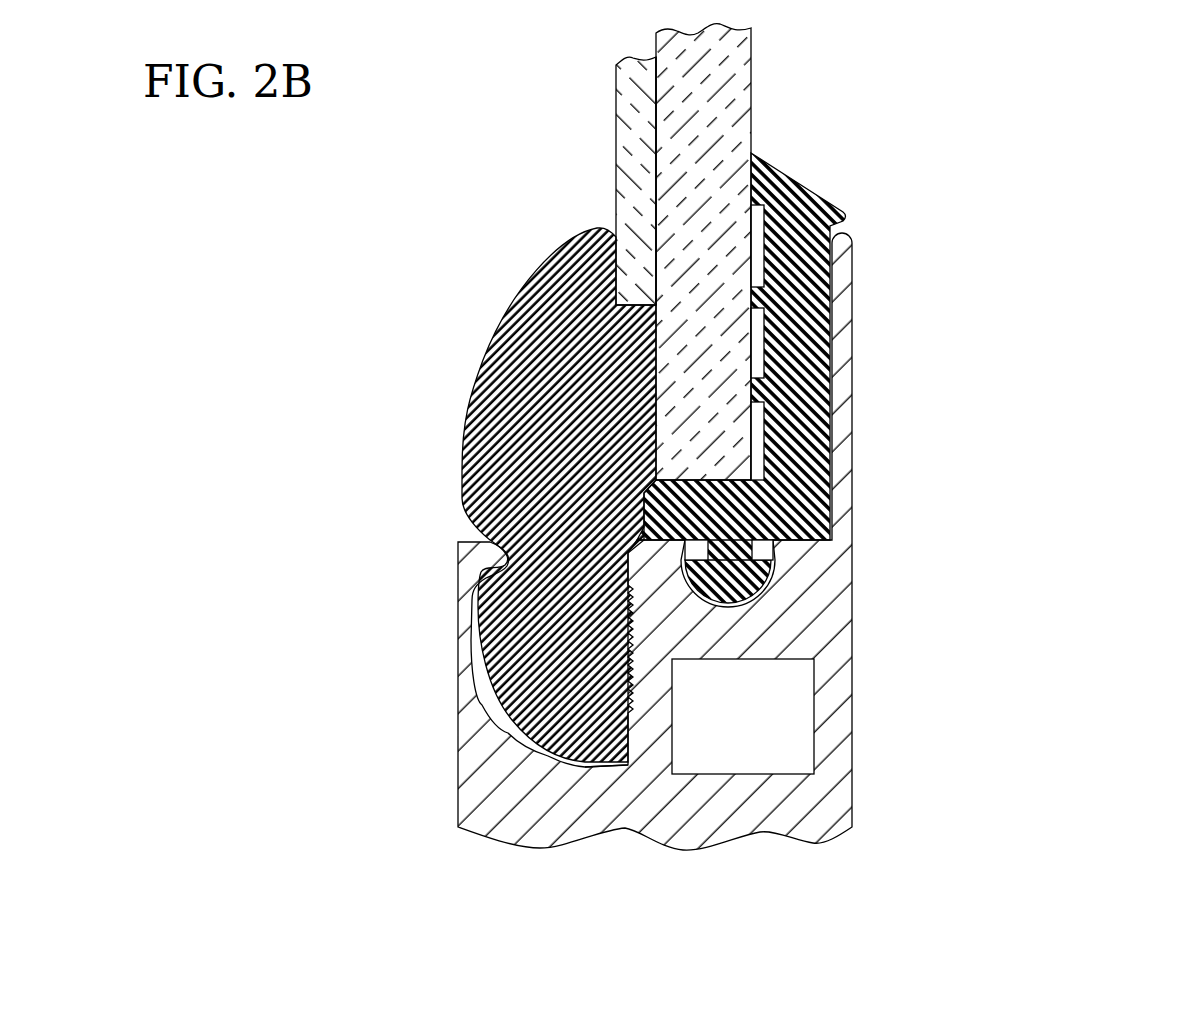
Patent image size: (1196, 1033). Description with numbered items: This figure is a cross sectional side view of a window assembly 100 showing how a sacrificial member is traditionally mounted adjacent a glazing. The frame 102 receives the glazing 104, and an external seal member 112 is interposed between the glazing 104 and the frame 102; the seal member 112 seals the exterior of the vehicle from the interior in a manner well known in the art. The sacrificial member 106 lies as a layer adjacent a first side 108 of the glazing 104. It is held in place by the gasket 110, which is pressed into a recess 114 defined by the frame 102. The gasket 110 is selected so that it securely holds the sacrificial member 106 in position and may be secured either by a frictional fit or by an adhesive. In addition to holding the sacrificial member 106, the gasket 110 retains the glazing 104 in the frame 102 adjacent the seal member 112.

The display assembly 100 is at (1053, 382).
The frame 102 is at (853, 723).
The glazing 104 is at (723, 73).
The sacrificial member 106 is at (632, 120).
The first side of the glazing 108 is at (655, 48).
The gasket 110 is at (505, 337).
The external seal member 112 is at (797, 197).
The recess 114 is at (620, 766).